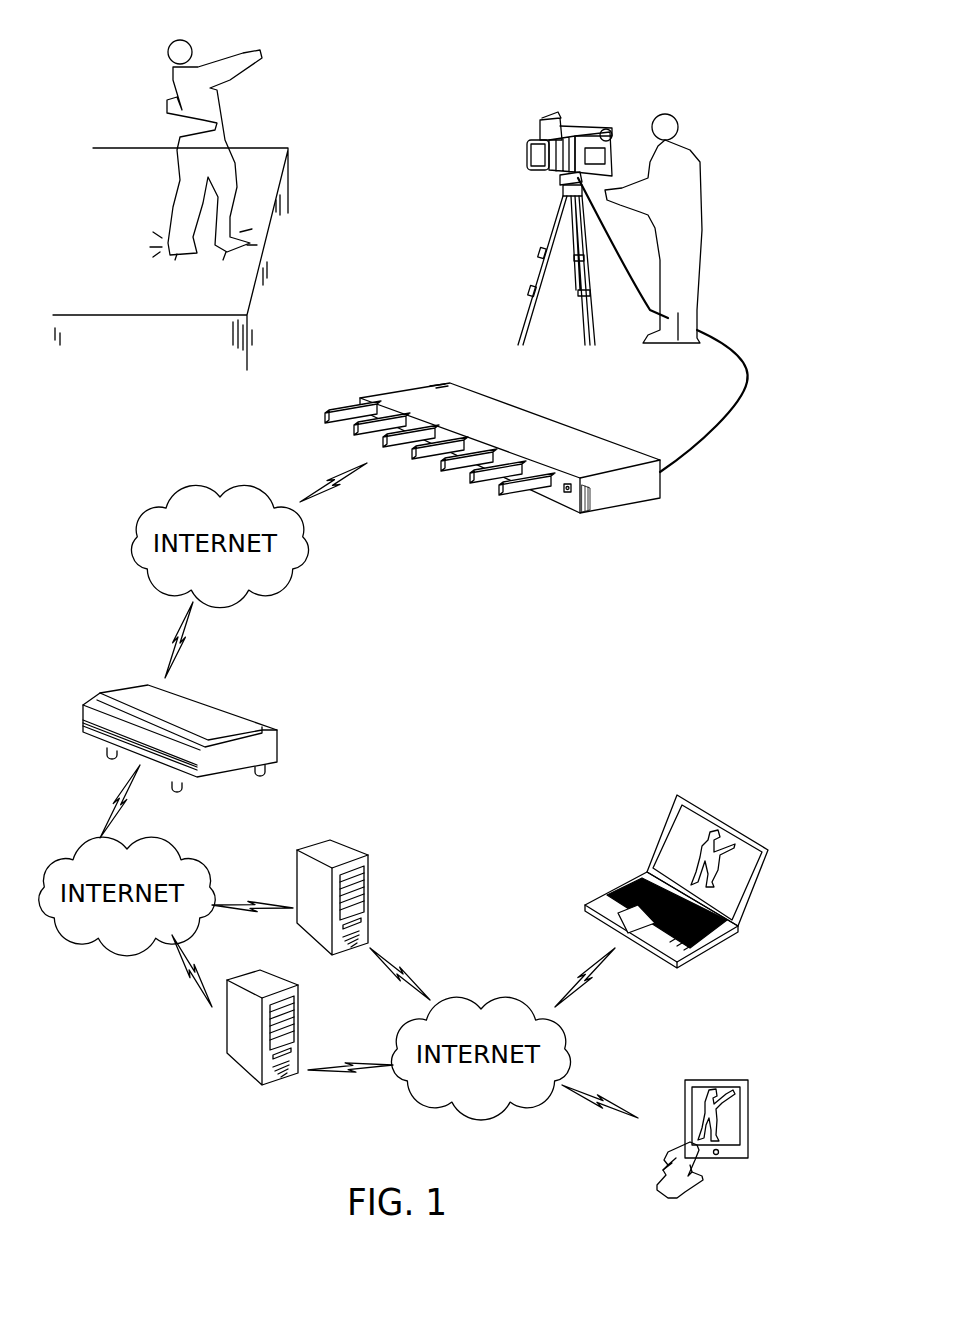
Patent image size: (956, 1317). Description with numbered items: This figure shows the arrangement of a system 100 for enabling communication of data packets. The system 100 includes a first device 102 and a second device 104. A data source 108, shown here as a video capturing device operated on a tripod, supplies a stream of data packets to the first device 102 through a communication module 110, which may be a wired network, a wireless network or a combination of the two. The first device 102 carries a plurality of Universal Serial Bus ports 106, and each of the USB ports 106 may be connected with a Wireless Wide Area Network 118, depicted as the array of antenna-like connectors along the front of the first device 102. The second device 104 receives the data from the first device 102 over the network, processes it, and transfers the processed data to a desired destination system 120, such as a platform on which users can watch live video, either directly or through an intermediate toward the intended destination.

The system 100 is at (84, 121).
The first device 102 is at (627, 503).
The second device 104 is at (98, 693).
The Universal Serial Bus (USB) ports 106 is at (567, 495).
The data source 108 is at (528, 110).
The communication module 110 is at (718, 446).
The Wireless Wide Area Network (WWAN) 118 is at (467, 477).
The destination system 120 is at (362, 824).